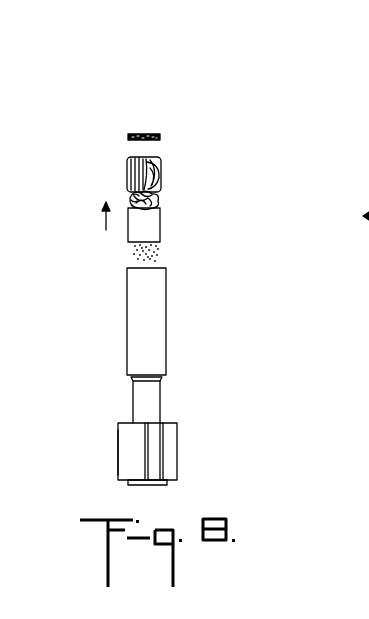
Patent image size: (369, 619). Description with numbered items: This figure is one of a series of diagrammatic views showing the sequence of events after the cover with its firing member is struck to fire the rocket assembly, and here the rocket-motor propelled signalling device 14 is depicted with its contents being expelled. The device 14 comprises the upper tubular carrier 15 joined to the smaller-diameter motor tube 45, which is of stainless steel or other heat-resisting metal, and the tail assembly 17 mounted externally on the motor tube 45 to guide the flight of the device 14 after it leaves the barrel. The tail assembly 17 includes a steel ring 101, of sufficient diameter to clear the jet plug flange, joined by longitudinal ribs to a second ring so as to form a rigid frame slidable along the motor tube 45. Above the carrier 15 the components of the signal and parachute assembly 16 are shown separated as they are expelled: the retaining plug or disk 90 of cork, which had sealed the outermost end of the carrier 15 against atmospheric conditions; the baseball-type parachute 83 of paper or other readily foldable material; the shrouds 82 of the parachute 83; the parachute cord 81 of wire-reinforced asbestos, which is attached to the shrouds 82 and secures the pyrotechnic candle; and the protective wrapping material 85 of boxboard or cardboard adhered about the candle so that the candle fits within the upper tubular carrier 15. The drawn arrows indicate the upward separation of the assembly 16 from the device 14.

The retaining plug or disk 90 is at (152, 132).
The parachute 83 is at (158, 166).
The rocket-motor propelled signalling or element-containing device 14 is at (166, 197).
The parachute cord 81 is at (133, 195).
The shrouds 82 is at (131, 201).
The protective wrapping material 85 is at (150, 226).
The upper tubular carrier 15 is at (152, 310).
The motor tube 45 is at (152, 395).
The signal and parachute assembly 16 is at (170, 448).
The tail assembly 17 is at (127, 442).
The ring 101 is at (167, 483).